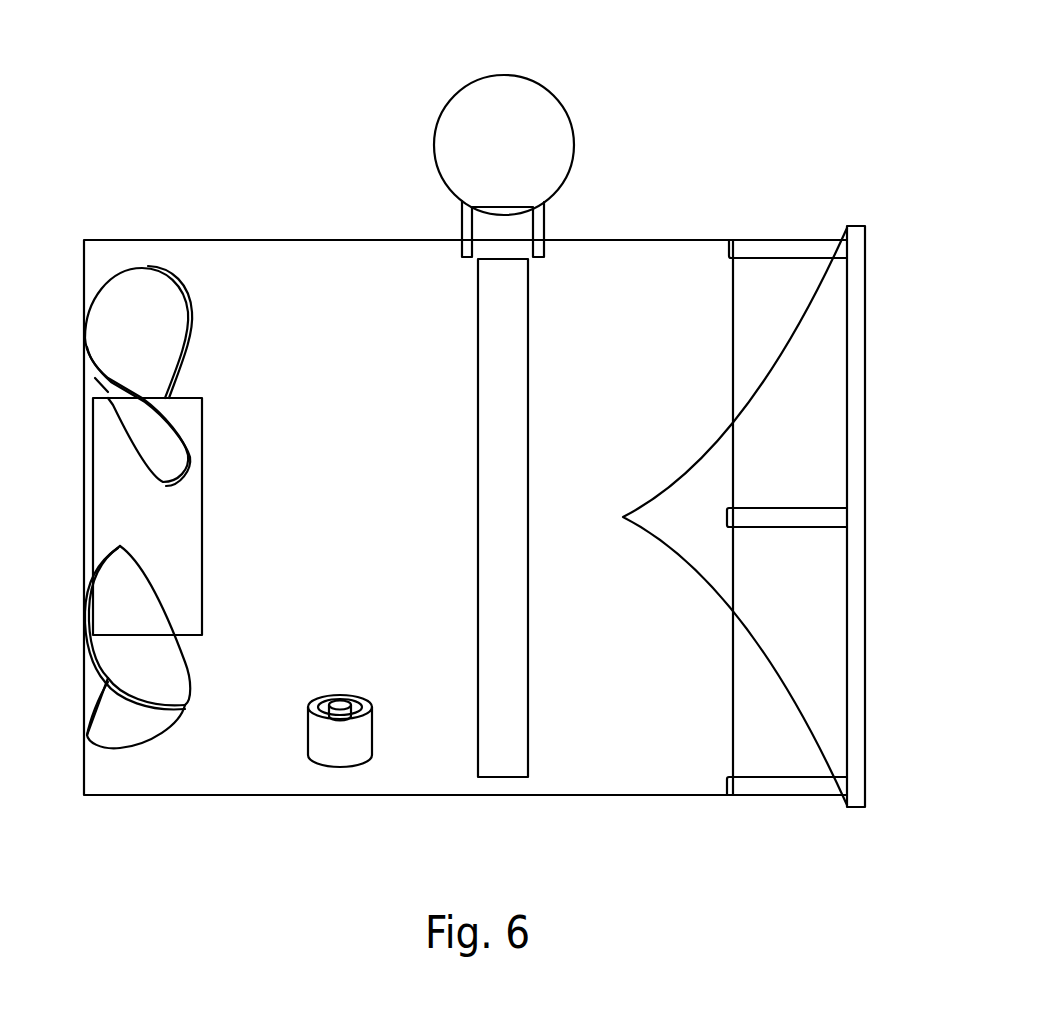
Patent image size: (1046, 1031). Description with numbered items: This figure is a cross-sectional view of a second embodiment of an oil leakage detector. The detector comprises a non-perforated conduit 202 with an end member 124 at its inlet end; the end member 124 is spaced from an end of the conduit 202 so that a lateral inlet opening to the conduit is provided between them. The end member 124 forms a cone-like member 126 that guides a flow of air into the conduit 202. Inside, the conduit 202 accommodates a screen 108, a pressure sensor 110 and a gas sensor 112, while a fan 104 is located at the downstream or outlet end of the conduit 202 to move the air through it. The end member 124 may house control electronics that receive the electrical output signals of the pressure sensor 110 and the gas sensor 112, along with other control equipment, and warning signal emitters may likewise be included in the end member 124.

The non-perforated conduit 202 is at (643, 238).
The end member 124 is at (853, 317).
The cone-like member 126 is at (767, 652).
The fan 104 is at (167, 320).
The pressure sensor 110 is at (523, 78).
The screen 108 is at (503, 758).
The gas sensor 112 is at (345, 758).